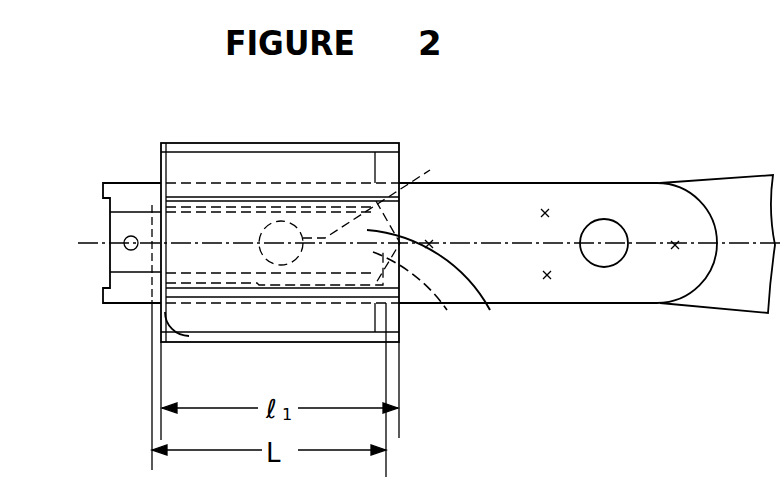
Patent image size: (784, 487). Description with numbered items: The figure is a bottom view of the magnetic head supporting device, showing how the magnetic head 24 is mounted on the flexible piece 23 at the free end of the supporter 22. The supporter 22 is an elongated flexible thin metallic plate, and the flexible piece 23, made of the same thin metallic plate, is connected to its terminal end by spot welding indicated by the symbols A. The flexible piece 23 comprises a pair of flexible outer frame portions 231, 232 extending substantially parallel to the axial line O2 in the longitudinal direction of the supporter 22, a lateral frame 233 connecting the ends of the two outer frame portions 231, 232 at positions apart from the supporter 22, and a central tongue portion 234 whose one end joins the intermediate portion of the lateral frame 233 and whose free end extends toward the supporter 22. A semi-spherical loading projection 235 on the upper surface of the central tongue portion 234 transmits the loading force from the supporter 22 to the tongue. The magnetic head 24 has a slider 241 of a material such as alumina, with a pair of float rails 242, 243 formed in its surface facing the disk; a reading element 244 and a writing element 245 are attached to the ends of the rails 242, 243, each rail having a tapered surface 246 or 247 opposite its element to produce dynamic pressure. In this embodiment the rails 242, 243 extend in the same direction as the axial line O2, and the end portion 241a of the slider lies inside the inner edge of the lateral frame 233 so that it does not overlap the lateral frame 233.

The supporter 22 is at (718, 203).
The flexible piece 23 is at (580, 200).
The magnetic head 24 is at (153, 328).
The flexible outer frame portion 231 is at (202, 147).
The flexible outer frame portion 232 is at (321, 280).
The lateral frame 233 is at (130, 263).
The central tongue portion 234 is at (423, 290).
The loading projection 235 is at (413, 183).
The slider 241 is at (483, 290).
The end portion of the slider 241a is at (164, 221).
The float rail 242 is at (257, 163).
The float rail 243 is at (242, 315).
The reading element 244 is at (159, 147).
The writing element 245 is at (186, 343).
The tapered surface 246 is at (385, 172).
The tapered surface 247 is at (397, 322).
The spot welding A is at (545, 212).
The axial line O2 is at (733, 250).